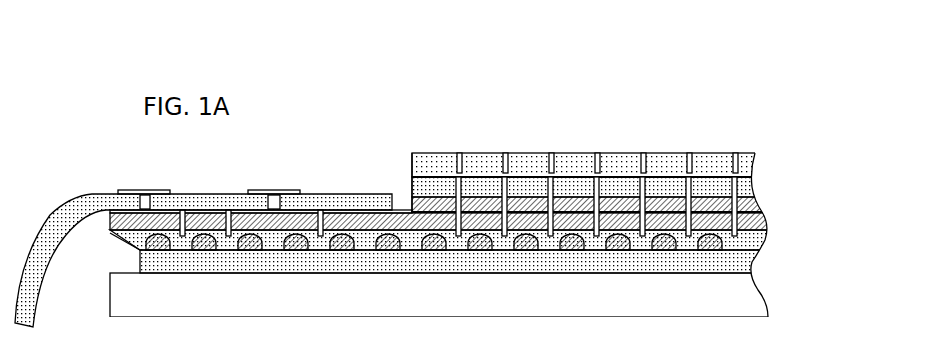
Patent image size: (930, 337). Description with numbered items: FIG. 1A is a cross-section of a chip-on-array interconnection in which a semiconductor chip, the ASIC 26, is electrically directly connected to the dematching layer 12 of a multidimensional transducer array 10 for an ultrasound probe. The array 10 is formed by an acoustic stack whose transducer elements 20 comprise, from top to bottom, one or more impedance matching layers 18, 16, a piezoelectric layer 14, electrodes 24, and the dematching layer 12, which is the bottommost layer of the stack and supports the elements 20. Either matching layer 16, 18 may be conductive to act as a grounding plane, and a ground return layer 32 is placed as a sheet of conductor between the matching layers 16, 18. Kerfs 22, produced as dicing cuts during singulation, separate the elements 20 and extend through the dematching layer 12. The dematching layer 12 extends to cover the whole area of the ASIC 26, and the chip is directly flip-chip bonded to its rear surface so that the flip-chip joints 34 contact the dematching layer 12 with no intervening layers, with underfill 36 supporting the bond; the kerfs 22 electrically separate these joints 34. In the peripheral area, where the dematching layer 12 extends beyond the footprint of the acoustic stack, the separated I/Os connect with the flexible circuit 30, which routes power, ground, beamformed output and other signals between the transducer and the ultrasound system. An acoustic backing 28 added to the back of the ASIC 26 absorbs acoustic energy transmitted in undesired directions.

The multidimensional transducer array 10 is at (800, 122).
The dematching layer 12 is at (752, 222).
The piezoelectric layer 14 is at (752, 205).
The matching layer 16 is at (750, 187).
The matching layer 18 is at (745, 163).
The transducer elements 20 is at (473, 157).
The kerfs 22 is at (182, 215).
The electrodes 24 is at (395, 228).
The ASIC 26 is at (456, 261).
The acoustic backing 28 is at (441, 295).
The flexible circuit 30 is at (317, 197).
The ground return layer 32 is at (530, 178).
The flip-chip joints 34 is at (712, 240).
The underfill 36 is at (733, 246).